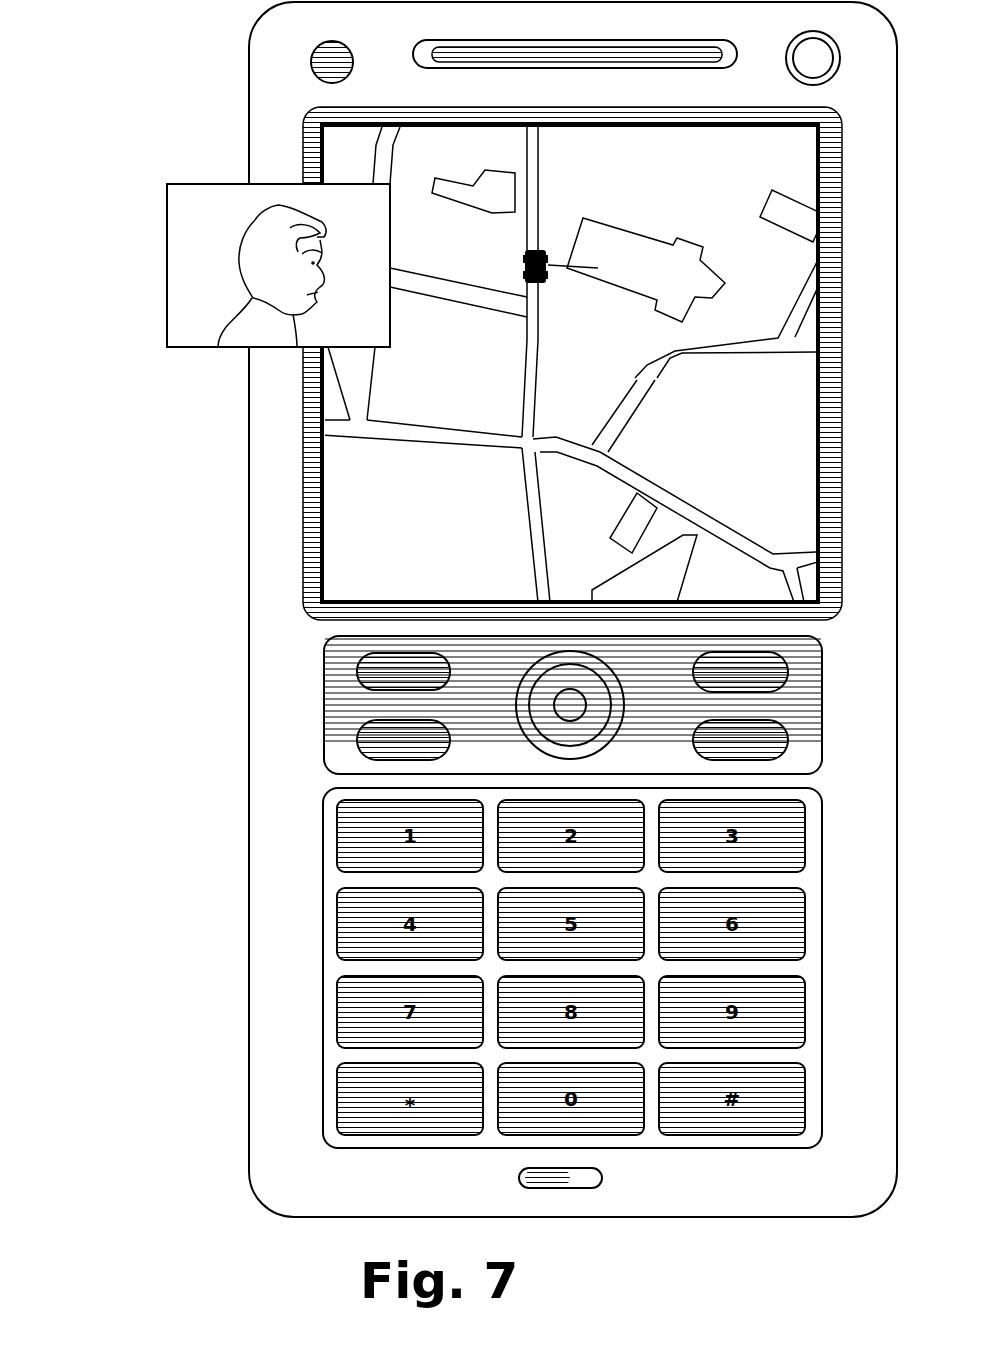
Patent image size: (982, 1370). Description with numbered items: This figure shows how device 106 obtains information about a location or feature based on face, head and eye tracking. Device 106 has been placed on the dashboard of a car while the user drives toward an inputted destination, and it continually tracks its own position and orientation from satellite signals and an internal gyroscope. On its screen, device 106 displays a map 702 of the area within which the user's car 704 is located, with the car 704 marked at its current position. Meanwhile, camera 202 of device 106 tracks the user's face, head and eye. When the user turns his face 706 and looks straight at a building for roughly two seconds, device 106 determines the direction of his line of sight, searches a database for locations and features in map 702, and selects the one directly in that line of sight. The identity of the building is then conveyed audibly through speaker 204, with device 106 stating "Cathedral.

The device 106 is at (249, 715).
The camera 202 is at (311, 62).
The speaker 204 is at (420, 66).
The map 702 is at (322, 573).
The car 704 is at (527, 281).
The face 706 is at (523, 264).